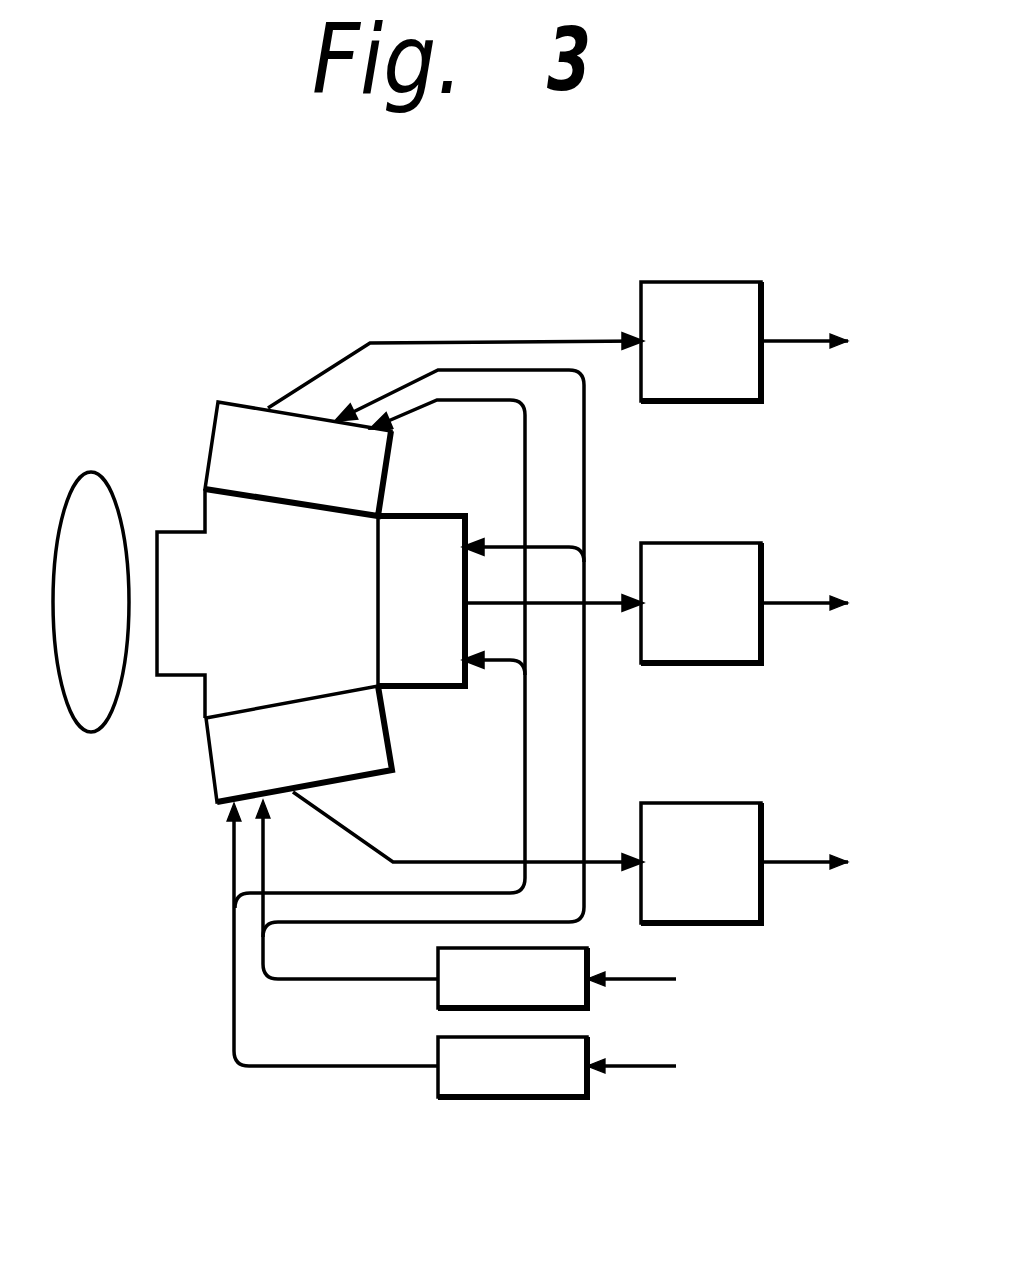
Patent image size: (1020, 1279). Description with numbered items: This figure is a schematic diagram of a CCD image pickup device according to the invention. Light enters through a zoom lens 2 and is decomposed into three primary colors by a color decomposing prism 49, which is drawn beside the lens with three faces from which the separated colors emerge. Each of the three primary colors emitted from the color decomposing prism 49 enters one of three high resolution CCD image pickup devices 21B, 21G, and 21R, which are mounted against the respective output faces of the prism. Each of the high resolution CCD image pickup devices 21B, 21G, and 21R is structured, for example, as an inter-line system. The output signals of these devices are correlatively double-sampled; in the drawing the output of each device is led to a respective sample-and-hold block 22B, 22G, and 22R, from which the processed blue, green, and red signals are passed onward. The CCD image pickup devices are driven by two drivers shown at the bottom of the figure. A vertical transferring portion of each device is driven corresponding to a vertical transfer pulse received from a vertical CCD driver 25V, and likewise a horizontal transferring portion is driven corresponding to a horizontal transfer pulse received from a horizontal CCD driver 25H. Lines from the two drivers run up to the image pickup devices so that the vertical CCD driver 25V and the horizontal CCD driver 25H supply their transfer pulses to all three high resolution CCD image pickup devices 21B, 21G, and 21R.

The zoom lens 2 is at (88, 472).
The color decomposing prism 49 is at (188, 652).
The high resolution CCD image pickup device 21B is at (232, 402).
The high resolution CCD image pickup device 21G is at (437, 513).
The high resolution CCD image pickup device 21R is at (365, 777).
The blue sample and hold circuit 22B is at (697, 282).
The green sample and hold circuit 22G is at (697, 543).
The red sample and hold circuit 22R is at (697, 803).
The horizontal CCD driver 25H is at (436, 996).
The vertical CCD driver 25V is at (436, 1084).